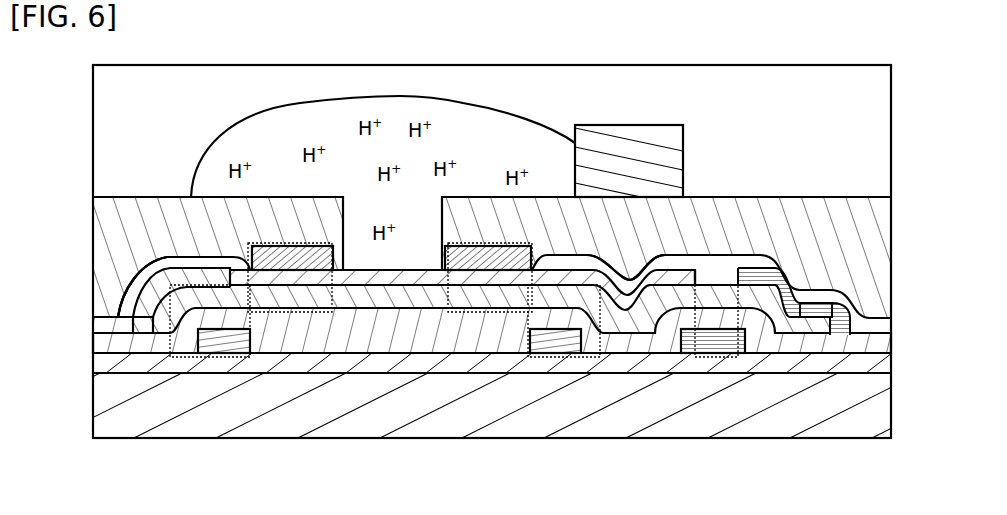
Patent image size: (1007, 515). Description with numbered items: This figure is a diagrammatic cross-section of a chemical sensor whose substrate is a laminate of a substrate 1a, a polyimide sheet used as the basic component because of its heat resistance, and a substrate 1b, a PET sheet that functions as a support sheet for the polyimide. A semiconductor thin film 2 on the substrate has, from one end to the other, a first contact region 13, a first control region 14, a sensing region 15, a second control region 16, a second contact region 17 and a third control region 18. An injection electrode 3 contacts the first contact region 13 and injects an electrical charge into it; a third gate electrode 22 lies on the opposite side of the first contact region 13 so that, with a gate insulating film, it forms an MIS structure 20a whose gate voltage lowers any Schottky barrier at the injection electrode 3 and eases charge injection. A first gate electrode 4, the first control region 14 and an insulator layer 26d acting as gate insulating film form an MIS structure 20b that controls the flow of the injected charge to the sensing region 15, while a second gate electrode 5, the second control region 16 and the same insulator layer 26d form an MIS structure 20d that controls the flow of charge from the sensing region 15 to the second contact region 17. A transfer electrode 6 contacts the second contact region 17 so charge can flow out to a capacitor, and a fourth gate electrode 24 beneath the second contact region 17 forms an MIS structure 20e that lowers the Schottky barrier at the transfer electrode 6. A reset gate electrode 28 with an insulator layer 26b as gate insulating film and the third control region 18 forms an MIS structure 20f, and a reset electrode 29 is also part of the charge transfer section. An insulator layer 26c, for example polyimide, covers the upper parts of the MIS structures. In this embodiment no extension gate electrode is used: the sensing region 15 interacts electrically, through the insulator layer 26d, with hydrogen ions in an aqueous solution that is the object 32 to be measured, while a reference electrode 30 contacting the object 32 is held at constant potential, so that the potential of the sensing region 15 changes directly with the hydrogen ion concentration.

The substrate 1a is at (112, 365).
The substrate 1b is at (848, 403).
The semiconductor thin film 2 is at (105, 320).
The injection electrode 3 is at (168, 288).
The first gate electrode 4 is at (280, 258).
The second gate electrode 5 is at (475, 258).
The transfer electrode 6 is at (652, 262).
The first contact region 13 is at (185, 350).
The first control region 14 is at (295, 290).
The sensing region 15 is at (387, 293).
The second control region 16 is at (495, 298).
The second contact region 17 is at (598, 280).
The third control region 18 is at (722, 295).
The MIS structure 20a is at (238, 350).
The MIS structure 20b is at (313, 325).
The MIS structure 20d is at (468, 313).
The MIS structure 20e is at (576, 340).
The MIS structure 20f is at (716, 266).
The third gate electrode 22 is at (220, 343).
The fourth gate electrode 24 is at (553, 343).
The insulator layer 26b is at (628, 345).
The insulator layer 26c is at (852, 233).
The insulator layer 26d is at (186, 250).
The reset gate electrode 28 is at (710, 340).
The reset electrode 29 is at (773, 266).
The reference electrode 30 is at (613, 157).
The object to be measured 32 is at (452, 115).